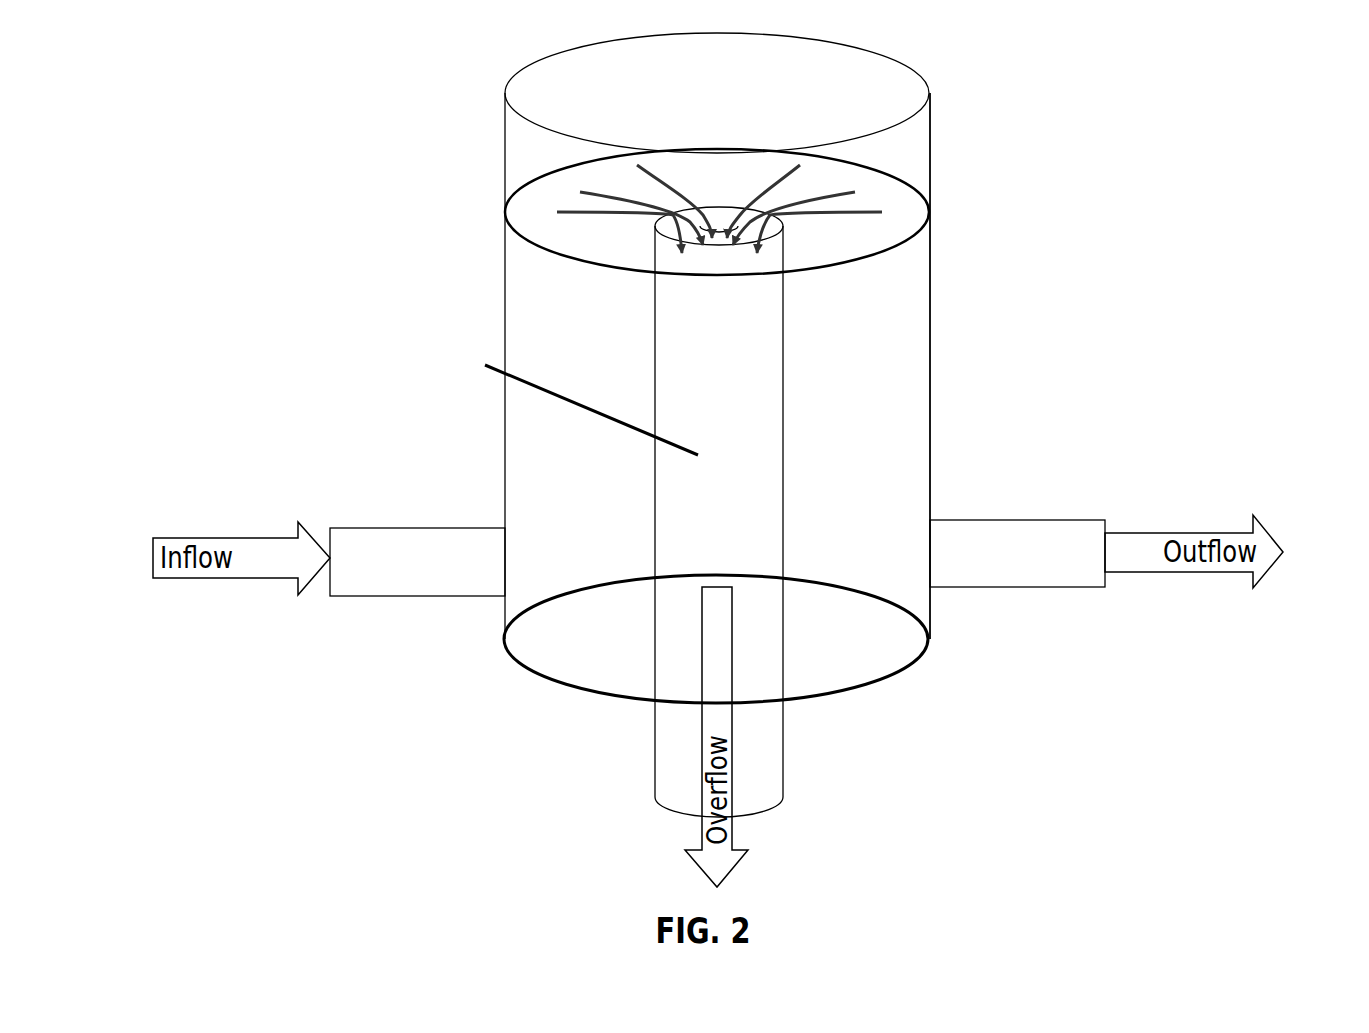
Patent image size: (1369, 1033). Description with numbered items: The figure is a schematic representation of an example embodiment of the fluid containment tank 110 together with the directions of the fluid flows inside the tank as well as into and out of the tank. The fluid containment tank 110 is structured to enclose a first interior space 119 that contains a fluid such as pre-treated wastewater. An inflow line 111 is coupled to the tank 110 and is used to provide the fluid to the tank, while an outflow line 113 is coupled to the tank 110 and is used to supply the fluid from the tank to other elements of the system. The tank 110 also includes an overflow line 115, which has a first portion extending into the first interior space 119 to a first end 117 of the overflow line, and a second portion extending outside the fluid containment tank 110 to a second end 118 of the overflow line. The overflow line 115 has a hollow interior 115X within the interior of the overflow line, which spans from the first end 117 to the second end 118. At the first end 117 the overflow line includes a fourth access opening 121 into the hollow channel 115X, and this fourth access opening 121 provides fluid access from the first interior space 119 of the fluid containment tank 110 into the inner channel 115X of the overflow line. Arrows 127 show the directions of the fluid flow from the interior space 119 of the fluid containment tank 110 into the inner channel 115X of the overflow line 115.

The fluid containment tank 110 is at (937, 128).
The inflow line 111 is at (418, 524).
The outflow line 113 is at (1021, 589).
The overflow line 115 is at (786, 338).
The hollow interior 115X is at (563, 404).
The first end 117 is at (652, 227).
The second end 118 is at (740, 818).
The first interior space 119 is at (596, 104).
The fourth access opening 121 is at (729, 212).
The arrows 127 is at (718, 203).